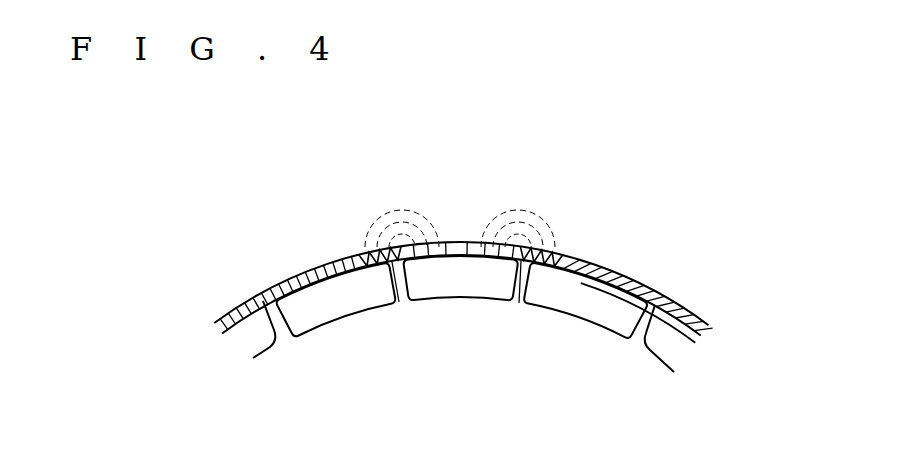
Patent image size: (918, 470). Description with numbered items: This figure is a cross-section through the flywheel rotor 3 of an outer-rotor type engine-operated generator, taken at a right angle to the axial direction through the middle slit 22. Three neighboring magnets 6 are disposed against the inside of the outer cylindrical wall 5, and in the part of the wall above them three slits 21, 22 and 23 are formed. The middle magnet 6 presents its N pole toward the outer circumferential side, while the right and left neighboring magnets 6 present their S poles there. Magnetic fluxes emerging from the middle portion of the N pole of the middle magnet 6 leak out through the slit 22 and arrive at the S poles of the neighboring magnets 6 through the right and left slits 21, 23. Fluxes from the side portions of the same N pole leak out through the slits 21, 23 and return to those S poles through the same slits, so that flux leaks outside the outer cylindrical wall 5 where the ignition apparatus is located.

The flywheel rotor 3 is at (300, 243).
The outer cylindrical wall 5 is at (627, 278).
The magnets 6 is at (340, 312).
The slit 21 is at (400, 300).
The slit 22 is at (463, 238).
The slit 23 is at (518, 290).